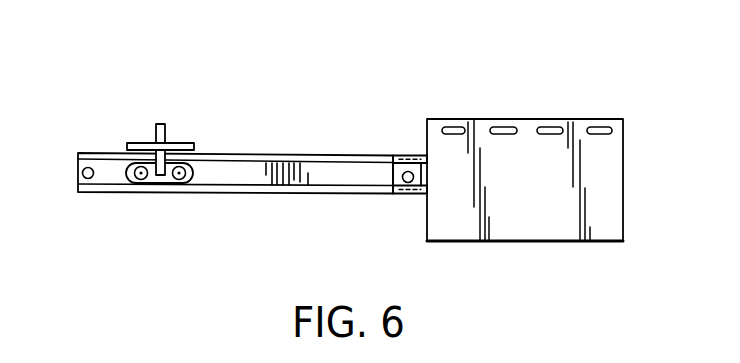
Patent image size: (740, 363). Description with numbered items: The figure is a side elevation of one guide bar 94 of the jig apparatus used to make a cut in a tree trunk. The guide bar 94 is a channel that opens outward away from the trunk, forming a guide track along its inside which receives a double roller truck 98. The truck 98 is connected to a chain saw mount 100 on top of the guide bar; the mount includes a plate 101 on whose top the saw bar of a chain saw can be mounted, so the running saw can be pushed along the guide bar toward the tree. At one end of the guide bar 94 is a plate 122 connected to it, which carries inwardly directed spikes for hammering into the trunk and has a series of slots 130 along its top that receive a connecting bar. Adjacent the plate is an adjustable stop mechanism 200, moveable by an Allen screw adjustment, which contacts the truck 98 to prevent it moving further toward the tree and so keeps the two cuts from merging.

The guide bar 94 is at (243, 193).
The double roller truck 98 is at (161, 176).
The chain saw mount 100 is at (205, 122).
The plate 101 is at (137, 142).
The plate 122 is at (528, 218).
The slots 130 is at (600, 127).
The adjustable stop mechanism 200 is at (397, 173).